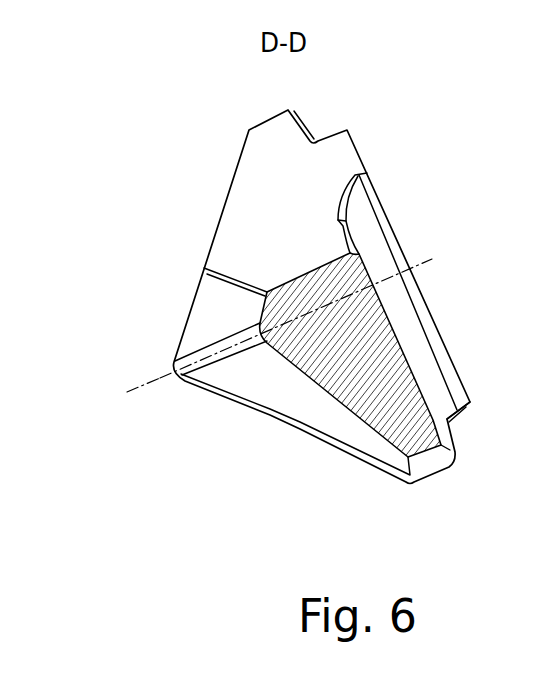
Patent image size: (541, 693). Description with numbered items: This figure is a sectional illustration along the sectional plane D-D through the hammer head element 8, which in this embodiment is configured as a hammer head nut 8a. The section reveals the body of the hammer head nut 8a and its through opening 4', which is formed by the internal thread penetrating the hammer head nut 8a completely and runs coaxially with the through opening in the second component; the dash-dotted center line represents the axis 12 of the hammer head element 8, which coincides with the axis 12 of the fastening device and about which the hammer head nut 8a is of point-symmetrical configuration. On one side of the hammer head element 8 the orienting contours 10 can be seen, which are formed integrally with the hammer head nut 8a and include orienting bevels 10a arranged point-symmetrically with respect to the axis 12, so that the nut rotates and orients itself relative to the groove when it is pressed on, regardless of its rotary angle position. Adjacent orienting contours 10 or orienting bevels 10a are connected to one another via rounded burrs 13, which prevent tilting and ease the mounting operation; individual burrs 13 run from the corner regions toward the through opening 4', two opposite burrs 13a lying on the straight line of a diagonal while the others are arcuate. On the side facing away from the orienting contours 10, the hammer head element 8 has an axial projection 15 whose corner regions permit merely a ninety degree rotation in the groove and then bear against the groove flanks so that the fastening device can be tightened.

The orienting contour 10 is at (266, 130).
The orienting bevel 10a is at (315, 413).
The hammer head element 8 is at (393, 178).
The hammer head nut 8a is at (408, 292).
The rounded burr 13 is at (215, 272).
The burr 13a is at (220, 357).
The axis 12 is at (150, 380).
The through opening 4' is at (346, 302).
The axial projection 15 is at (463, 411).